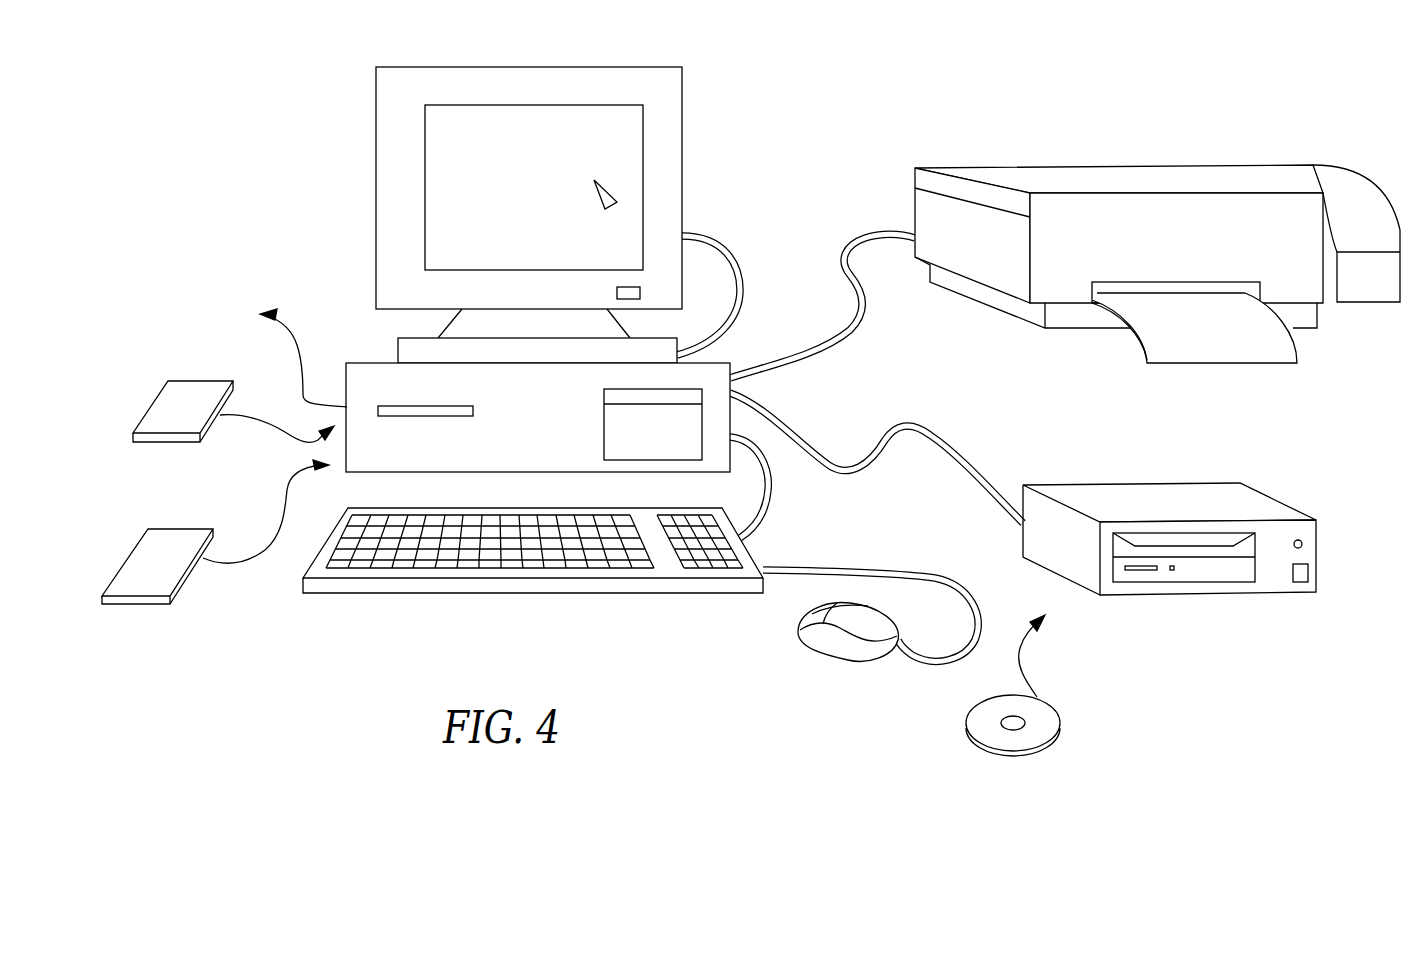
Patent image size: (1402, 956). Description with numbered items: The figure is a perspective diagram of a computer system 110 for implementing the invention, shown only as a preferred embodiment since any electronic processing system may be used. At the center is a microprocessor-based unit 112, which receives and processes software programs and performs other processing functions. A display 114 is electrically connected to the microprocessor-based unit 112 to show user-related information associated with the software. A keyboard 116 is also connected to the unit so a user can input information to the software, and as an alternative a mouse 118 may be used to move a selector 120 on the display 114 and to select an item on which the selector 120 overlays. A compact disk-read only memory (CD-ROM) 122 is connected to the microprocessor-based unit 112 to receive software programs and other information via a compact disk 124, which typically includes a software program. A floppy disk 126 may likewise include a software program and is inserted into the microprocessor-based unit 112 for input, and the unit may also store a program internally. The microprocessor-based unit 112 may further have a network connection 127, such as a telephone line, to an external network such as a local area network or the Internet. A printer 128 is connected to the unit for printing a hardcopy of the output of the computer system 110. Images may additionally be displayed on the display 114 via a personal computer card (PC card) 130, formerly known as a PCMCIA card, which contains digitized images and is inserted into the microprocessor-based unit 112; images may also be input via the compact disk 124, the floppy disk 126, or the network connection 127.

The computer system 110 is at (760, 124).
The microprocessor-based unit 112 is at (370, 363).
The display 114 is at (500, 67).
The keyboard 116 is at (355, 595).
The mouse 118 is at (838, 658).
The selector 120 is at (612, 193).
The compact disk-read only memory (CD-ROM) 122 is at (1132, 485).
The compact disk 124 is at (1062, 723).
The floppy disk 126 is at (160, 397).
The network connection 127 is at (279, 355).
The printer 128 is at (1113, 168).
The personal computer card (PC card) 130 is at (137, 545).